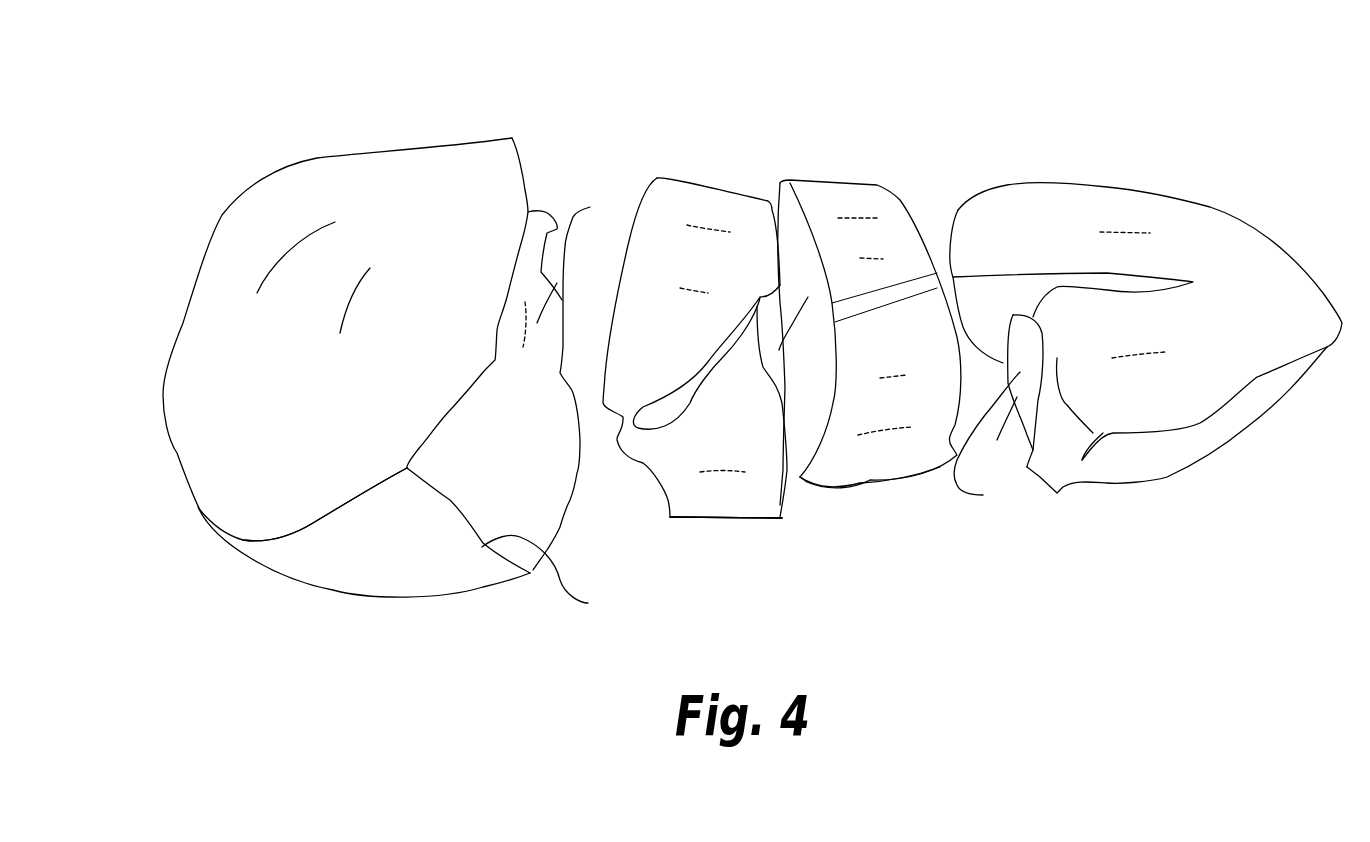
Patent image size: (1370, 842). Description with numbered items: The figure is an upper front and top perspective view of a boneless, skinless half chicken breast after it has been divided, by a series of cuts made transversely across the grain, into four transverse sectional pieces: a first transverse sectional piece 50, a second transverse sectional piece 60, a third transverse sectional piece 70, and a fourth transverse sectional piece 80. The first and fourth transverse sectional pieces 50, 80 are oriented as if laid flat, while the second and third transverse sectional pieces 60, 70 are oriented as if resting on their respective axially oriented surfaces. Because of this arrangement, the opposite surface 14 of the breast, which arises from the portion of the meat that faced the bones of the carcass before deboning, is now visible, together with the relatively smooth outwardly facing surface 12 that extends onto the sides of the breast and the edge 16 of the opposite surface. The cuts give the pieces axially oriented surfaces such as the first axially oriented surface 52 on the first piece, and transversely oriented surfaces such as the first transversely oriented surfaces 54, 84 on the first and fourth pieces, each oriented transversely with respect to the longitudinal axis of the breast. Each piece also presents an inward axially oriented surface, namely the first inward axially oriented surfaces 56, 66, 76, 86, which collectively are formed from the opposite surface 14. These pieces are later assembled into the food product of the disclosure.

The outwardly facing surface 12 is at (394, 565).
The opposite surface 14 is at (514, 476).
The edge 16 is at (873, 484).
The first transverse sectional piece 50 is at (368, 125).
The first axially oriented surface 52 is at (453, 574).
The first transversely oriented surface 54 is at (426, 236).
The first inward axially oriented surface 56 is at (573, 217).
The second transverse sectional piece 60 is at (718, 172).
The first inward axially oriented surface 66 is at (748, 521).
The third transverse sectional piece 70 is at (832, 153).
The first inward axially oriented surface 76 is at (898, 490).
The fourth transverse sectional piece 80 is at (1173, 157).
The first transversely oriented surface 84 is at (1261, 317).
The first inward axially oriented surface 86 is at (989, 441).